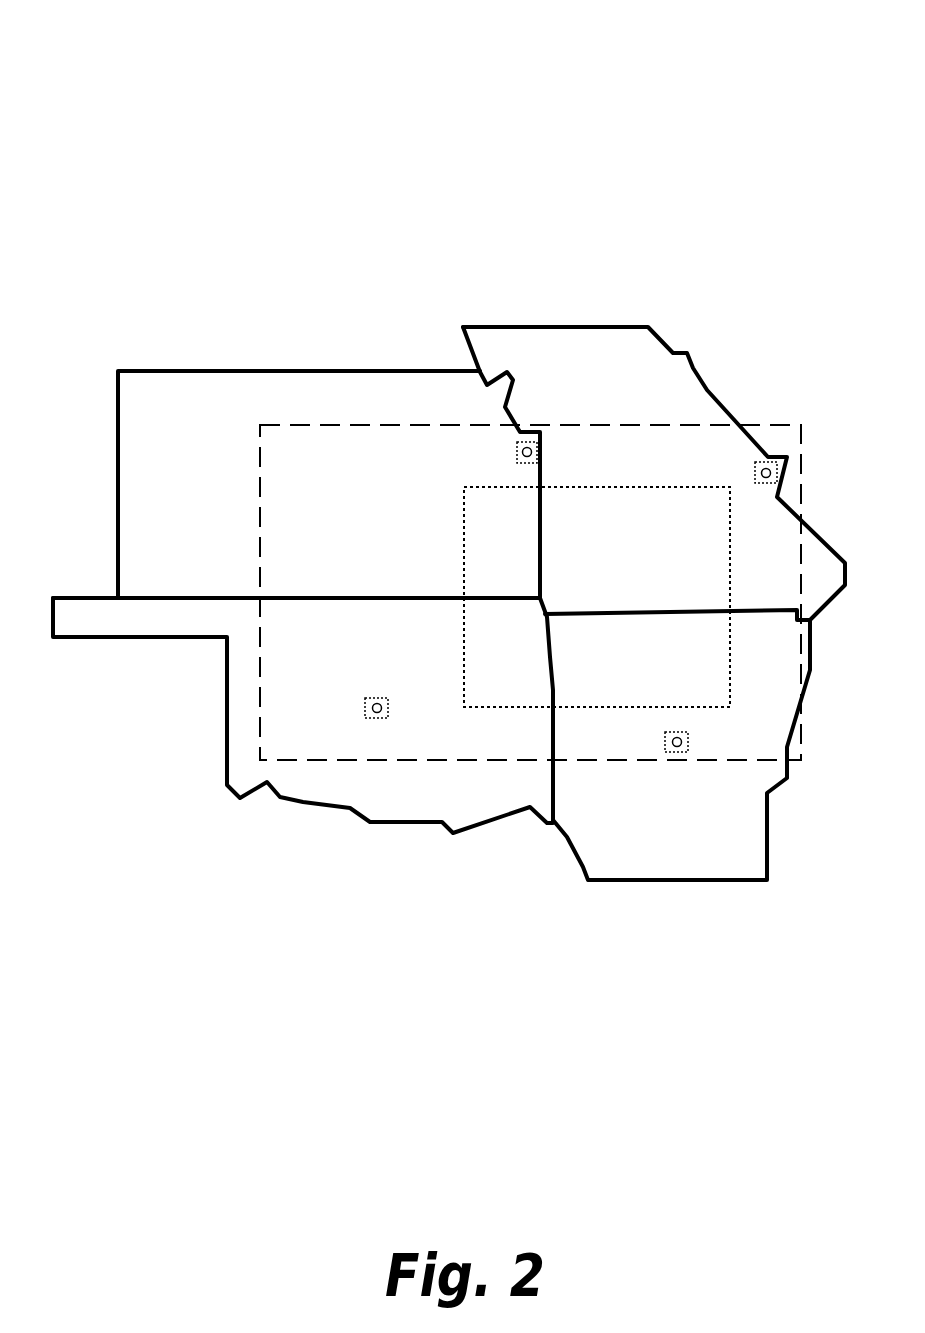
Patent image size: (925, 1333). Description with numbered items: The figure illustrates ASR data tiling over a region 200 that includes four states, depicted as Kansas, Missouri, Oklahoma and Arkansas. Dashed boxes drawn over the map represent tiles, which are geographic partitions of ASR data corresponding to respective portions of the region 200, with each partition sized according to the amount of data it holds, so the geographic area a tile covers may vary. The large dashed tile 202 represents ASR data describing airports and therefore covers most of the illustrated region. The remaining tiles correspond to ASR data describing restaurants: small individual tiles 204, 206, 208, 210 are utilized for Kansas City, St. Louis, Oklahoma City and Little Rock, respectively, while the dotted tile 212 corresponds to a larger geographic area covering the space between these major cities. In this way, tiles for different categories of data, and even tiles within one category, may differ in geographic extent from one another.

The region 200 is at (138, 62).
The tile 202 is at (258, 424).
The tile 204 is at (539, 446).
The tile 206 is at (754, 462).
The tile 208 is at (374, 719).
The tile 210 is at (679, 753).
The tile 212 is at (463, 560).